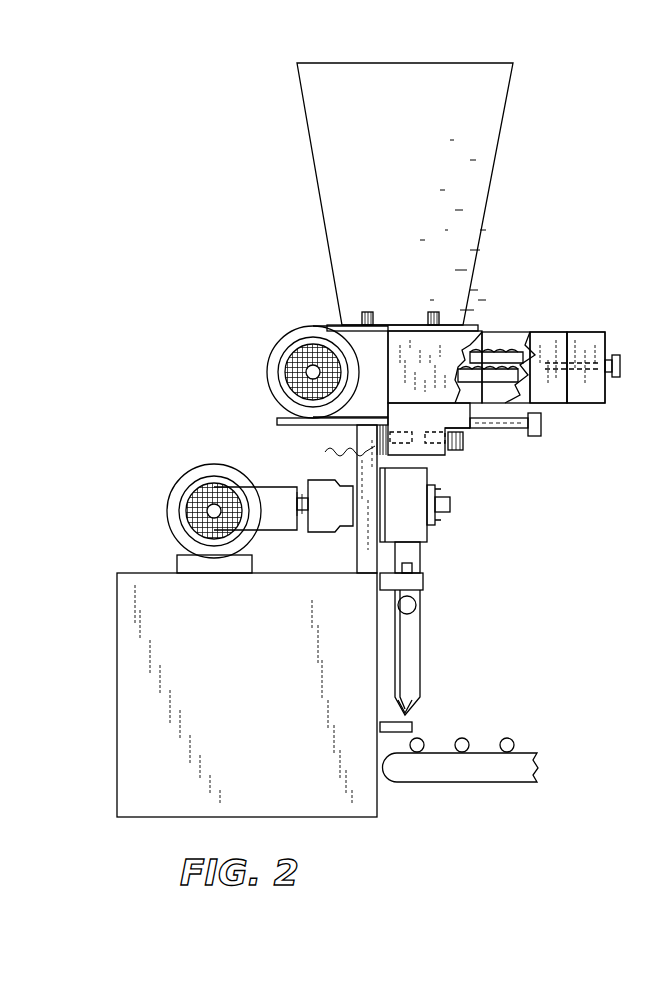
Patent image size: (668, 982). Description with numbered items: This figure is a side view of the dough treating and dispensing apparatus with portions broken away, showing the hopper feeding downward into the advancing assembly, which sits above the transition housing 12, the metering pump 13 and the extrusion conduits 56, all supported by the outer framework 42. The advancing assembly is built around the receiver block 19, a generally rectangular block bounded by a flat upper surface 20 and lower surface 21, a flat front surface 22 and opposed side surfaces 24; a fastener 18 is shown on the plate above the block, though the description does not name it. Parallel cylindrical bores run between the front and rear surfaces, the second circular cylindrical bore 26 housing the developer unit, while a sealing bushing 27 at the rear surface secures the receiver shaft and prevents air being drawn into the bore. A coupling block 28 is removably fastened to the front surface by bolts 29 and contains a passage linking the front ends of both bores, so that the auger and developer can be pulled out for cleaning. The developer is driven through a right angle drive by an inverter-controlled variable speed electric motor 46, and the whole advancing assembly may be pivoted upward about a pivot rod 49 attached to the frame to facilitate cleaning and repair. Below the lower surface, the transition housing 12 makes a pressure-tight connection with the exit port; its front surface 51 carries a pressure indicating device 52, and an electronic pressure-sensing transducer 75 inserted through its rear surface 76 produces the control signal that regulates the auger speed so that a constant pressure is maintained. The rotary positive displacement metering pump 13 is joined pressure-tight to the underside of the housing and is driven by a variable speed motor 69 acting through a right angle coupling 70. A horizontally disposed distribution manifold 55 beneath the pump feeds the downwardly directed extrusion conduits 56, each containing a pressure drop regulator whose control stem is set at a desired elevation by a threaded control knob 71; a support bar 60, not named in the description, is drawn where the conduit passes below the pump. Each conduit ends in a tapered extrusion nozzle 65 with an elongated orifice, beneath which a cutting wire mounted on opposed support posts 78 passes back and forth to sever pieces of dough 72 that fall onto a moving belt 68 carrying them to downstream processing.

The transition housing 12 is at (445, 460).
The metering pump 13 is at (367, 505).
The bolt 18 is at (368, 312).
The receiver block 19 is at (560, 328).
The upper surface 20 is at (565, 332).
The lower surface 21 is at (538, 403).
The front surface 22 is at (570, 403).
The side surfaces 24 is at (483, 356).
The second circular cylindrical bore 26 is at (494, 332).
The sealing bushing 27 is at (378, 326).
The coupling block 28 is at (598, 332).
The bolts 29 is at (613, 357).
The outer framework 42 is at (247, 695).
The variable speed electric motor 46 is at (283, 340).
The pivot rod 49 is at (510, 430).
The front surface 51 is at (450, 455).
The pressure indicating device 52 is at (455, 450).
The distribution manifold 55 is at (415, 603).
The extrusion conduits 56 is at (420, 640).
The support bar 60 is at (423, 578).
The tapered extrusion nozzle 65 is at (410, 712).
The conveyor belt 68 is at (461, 767).
The variable speed motor 69 is at (196, 478).
The right angle coupling 70 is at (272, 530).
The threaded control knob 71 is at (412, 562).
The pieces of dough 72 is at (462, 739).
The electronic pressure-sensing transducer 75 is at (375, 452).
The rear surface 76 is at (377, 440).
The support posts 78 is at (412, 728).